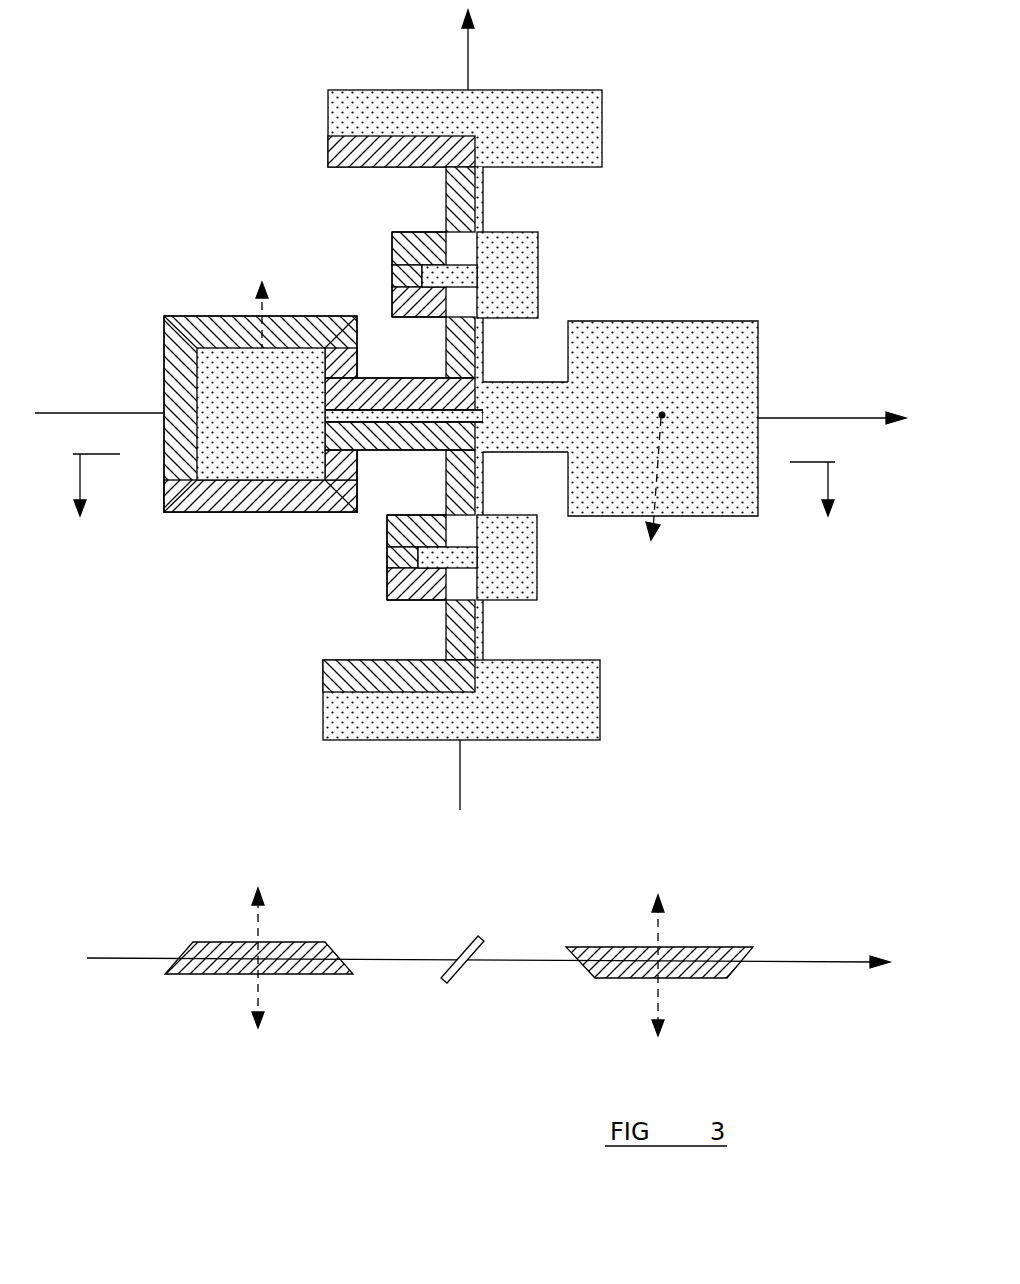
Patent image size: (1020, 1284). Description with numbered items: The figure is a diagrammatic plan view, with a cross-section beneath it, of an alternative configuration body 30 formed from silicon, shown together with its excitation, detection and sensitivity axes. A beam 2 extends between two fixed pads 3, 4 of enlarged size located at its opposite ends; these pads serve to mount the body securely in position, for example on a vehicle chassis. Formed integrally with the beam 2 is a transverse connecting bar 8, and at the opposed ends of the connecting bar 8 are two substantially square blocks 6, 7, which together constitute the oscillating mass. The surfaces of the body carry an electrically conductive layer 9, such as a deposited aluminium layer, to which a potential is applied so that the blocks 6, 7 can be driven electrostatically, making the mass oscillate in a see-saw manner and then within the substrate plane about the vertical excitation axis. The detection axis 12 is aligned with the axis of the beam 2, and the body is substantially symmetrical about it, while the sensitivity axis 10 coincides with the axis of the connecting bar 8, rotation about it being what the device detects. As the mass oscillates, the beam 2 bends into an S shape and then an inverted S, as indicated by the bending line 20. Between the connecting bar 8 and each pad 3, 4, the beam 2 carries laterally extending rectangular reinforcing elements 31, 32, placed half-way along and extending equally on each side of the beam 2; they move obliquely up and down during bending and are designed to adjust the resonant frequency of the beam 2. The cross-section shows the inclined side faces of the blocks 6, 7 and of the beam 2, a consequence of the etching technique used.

The beam 2 is at (440, 617).
The pad 3 is at (555, 722).
The pad 4 is at (537, 103).
The block 6 is at (740, 497).
The block 7 is at (63, 413).
The connecting bar 8 is at (532, 392).
The electrically conductive layer 9 is at (222, 385).
The sensitivity axis 10 is at (838, 418).
The detection axis 12 is at (468, 60).
The bending line 20 is at (479, 275).
The body 30 is at (699, 196).
The reinforcing element 31 is at (532, 278).
The reinforcing element 32 is at (519, 570).